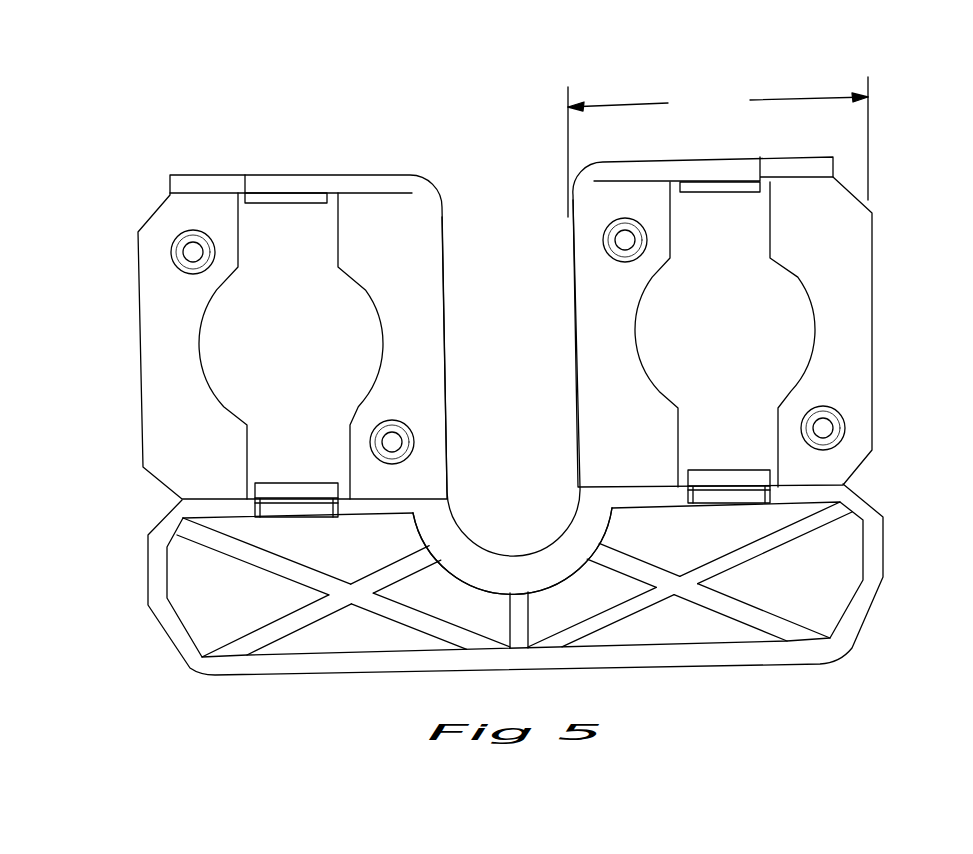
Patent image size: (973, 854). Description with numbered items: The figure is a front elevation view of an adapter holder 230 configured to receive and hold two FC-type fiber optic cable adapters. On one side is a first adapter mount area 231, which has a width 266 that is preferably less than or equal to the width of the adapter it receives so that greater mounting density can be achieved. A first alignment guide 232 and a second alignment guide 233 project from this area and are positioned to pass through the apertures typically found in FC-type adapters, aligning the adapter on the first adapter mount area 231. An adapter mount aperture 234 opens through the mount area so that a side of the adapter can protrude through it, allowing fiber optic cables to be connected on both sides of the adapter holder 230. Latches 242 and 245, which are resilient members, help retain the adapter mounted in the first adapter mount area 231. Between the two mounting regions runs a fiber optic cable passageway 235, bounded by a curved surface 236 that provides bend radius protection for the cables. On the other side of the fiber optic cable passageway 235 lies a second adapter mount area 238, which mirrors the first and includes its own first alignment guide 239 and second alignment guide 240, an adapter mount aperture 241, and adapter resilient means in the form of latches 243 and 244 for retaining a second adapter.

The adapter holder 230 is at (913, 206).
The first adapter mount area 231 is at (847, 289).
The first alignment guide 232 is at (607, 236).
The second alignment guide 233 is at (845, 418).
The adapter mount aperture 234 is at (700, 353).
The fiber optic cable passageway 235 is at (478, 350).
The curved surface 236 is at (488, 572).
The second adapter mount area 238 is at (168, 333).
The first alignment guide 239 is at (182, 240).
The second alignment guide 240 is at (406, 424).
The adapter mount aperture 241 is at (270, 364).
The latch 242 is at (716, 190).
The latch 243 is at (288, 203).
The latch 244 is at (298, 488).
The latch 245 is at (723, 482).
The width 266 is at (718, 147).